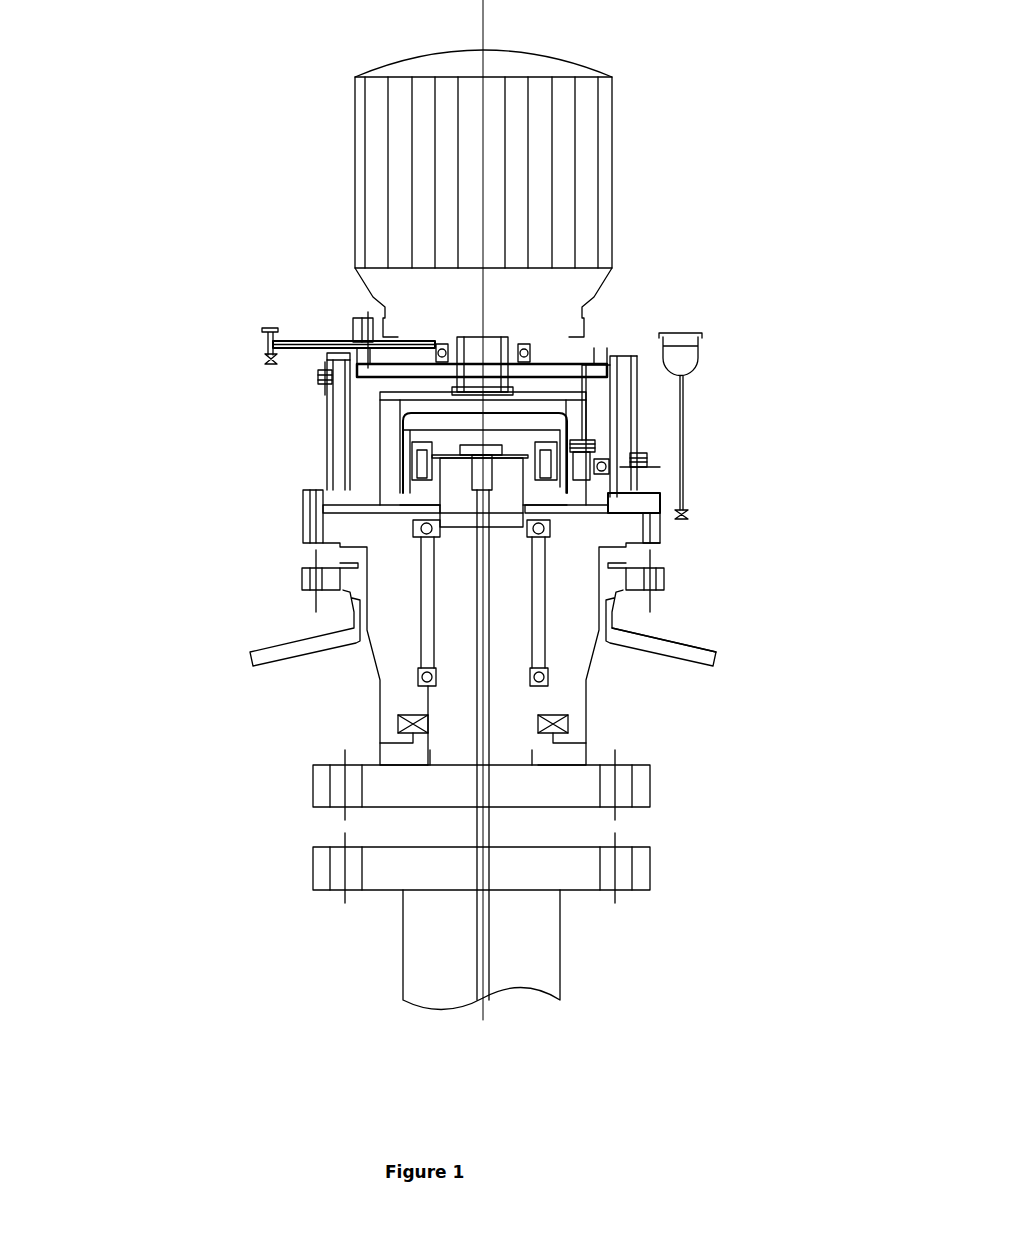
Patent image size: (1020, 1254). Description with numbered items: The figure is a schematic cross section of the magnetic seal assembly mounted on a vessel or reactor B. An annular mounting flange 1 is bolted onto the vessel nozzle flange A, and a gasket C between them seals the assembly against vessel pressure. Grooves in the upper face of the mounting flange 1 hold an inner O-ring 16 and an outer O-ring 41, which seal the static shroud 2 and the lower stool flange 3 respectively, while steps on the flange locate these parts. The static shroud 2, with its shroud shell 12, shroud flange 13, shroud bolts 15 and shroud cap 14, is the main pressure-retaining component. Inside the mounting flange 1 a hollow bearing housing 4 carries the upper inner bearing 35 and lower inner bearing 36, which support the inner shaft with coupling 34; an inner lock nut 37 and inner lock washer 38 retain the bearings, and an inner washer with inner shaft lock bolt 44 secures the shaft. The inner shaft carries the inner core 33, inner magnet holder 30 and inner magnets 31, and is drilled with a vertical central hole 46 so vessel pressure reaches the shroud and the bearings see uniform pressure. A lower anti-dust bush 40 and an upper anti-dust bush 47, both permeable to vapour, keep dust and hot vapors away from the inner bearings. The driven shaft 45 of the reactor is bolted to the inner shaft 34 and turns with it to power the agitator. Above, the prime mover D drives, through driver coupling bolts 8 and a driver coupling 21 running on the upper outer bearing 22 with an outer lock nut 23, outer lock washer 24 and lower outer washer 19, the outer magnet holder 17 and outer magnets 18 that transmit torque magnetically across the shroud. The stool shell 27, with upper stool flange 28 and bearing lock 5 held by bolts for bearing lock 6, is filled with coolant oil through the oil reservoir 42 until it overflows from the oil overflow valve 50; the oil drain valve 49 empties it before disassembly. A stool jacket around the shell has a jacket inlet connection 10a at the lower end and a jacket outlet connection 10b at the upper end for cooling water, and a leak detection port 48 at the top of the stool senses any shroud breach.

The prime mover D is at (612, 133).
The upper stool flange 28 is at (355, 340).
The inner core 33 is at (335, 345).
The inner magnets 31 is at (333, 367).
The leak detection port 48 is at (262, 333).
The jacket outlet connection 10b is at (265, 358).
The inner magnet holder 30 is at (330, 356).
The upper anti-dust bush 47 is at (348, 433).
The bearing lock 5 is at (340, 453).
The oil overflow valve 50 is at (318, 373).
The outer magnets 18 is at (357, 413).
The outer lock washer 24 is at (522, 358).
The outer lock nut 23 is at (527, 344).
The shroud flange 13 is at (360, 507).
The shroud bolts 15 is at (380, 493).
The upper outer bearing 22 is at (540, 370).
The inner shaft lock bolt 44 is at (492, 440).
The central hole 46 is at (475, 787).
The shroud cap 14 is at (600, 400).
The static shroud 2 is at (600, 410).
The driver coupling bolts 8 is at (600, 420).
The outer magnet holder 17 is at (609, 467).
The inner lock nut 37 is at (618, 445).
The stool shell 27 is at (630, 455).
The shroud shell 12 is at (650, 455).
The jacket inlet connection 10a is at (660, 467).
The oil reservoir 42 is at (700, 346).
The driver coupling 21 is at (695, 368).
The oil drain valve 49 is at (689, 514).
The lower stool flange 3 is at (660, 501).
The bolts for bearing lock 6 is at (655, 505).
The lower outer washer 19 is at (550, 535).
The inner O-ring 16 is at (360, 515).
The mounting flange 1 is at (303, 512).
The outer O-ring 41 is at (315, 510).
The inner lock washer 38 is at (421, 540).
The lower anti-dust bush 40 is at (400, 727).
The gasket C is at (350, 562).
The bearing housing 4 is at (592, 640).
The lower inner bearing 36 is at (545, 678).
The vessel nozzle flange A is at (657, 593).
The vessel or reactor B is at (672, 662).
The upper inner bearing 35 is at (652, 566).
The inner shaft with coupling 34 is at (650, 790).
The driven shaft 45 is at (560, 945).